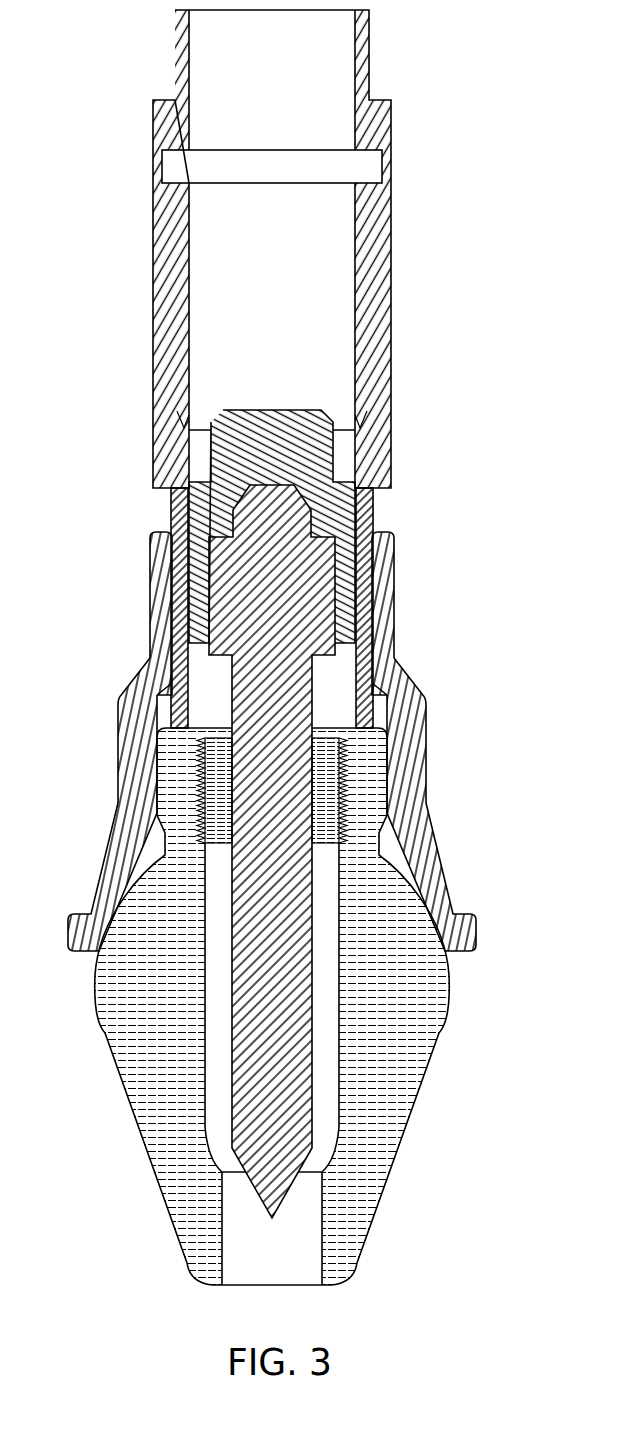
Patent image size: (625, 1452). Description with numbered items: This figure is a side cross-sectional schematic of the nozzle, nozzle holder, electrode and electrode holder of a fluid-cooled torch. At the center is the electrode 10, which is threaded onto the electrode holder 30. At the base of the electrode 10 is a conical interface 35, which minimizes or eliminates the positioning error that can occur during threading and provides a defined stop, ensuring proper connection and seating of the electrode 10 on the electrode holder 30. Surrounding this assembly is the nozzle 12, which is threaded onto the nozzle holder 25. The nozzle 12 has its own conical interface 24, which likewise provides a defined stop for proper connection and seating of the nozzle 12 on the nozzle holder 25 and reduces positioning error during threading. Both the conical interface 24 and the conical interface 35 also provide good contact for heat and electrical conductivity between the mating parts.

The electrode 10 is at (245, 525).
The nozzle 12 is at (427, 1025).
The conical interface 24 is at (118, 763).
The nozzle holder 25 is at (150, 634).
The electrode holder 30 is at (240, 313).
The conical interface 35 is at (312, 440).